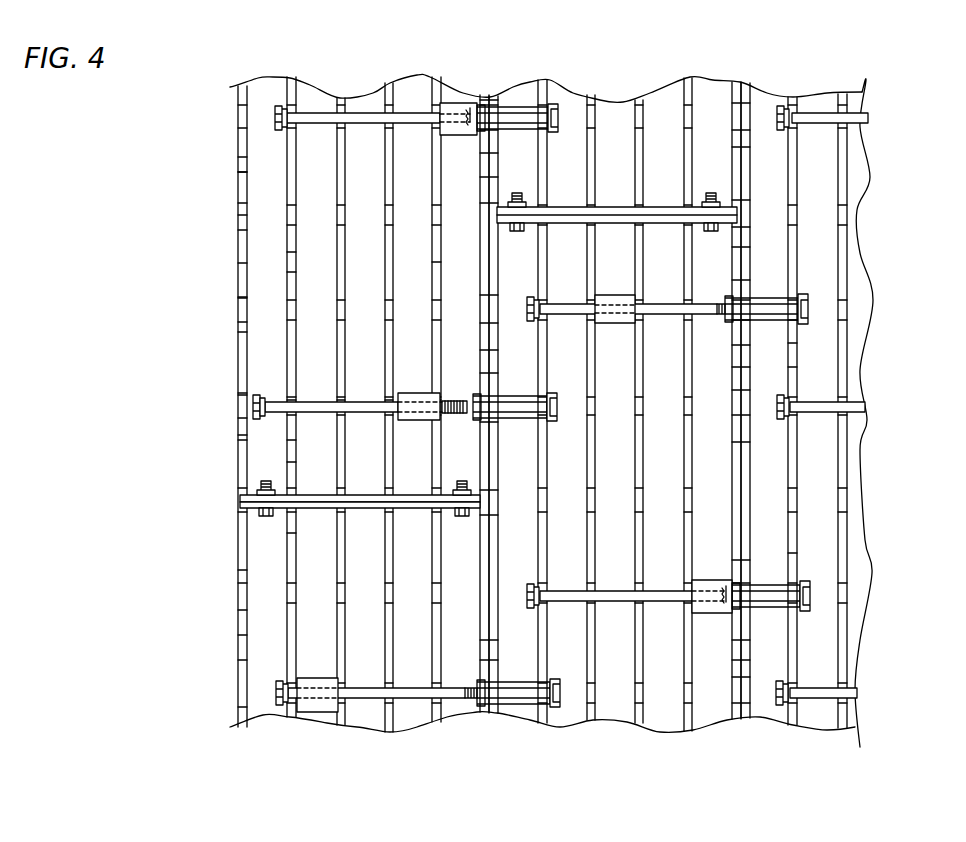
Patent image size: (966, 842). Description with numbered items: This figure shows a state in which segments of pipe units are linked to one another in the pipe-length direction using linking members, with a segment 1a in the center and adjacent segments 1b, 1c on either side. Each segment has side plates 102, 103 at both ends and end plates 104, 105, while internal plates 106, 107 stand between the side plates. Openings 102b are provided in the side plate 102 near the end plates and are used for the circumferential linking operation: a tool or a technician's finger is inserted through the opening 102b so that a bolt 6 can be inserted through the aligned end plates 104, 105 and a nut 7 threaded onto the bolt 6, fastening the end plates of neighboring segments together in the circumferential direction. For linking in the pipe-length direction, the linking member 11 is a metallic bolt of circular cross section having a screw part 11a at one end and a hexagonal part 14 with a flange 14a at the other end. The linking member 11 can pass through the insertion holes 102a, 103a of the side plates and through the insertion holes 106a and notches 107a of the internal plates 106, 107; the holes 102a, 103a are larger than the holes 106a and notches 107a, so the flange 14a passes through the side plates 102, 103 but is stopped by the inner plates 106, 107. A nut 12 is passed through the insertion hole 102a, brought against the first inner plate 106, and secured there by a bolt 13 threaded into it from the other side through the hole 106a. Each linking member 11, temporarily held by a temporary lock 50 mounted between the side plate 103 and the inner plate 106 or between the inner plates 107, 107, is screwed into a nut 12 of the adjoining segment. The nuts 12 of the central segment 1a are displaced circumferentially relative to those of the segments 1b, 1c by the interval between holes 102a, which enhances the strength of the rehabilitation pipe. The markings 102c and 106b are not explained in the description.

The segment 1a is at (627, 743).
The segment 1b is at (196, 129).
The segment 1c is at (889, 442).
The bolt 6 is at (258, 516).
The nut 7 is at (451, 391).
The linking member 11 is at (320, 124).
The screw part 11a is at (455, 401).
The nut 12 is at (500, 396).
The bolt 13 is at (552, 393).
The hexagonal part 14 is at (278, 126).
The flange 14a is at (262, 418).
The temporary lock 50 is at (460, 136).
The side plate 102 is at (494, 95).
The insertion hole 102a is at (238, 215).
The opening 102b is at (238, 332).
The frame member portion 102c is at (238, 172).
The side plate 103 is at (484, 95).
The insertion hole 103a is at (482, 422).
The end plate 104 is at (312, 494).
The end plate 105 is at (313, 509).
The inner plate 106 is at (290, 78).
The insertion hole 106a is at (293, 400).
The stud portion 106b is at (437, 262).
The inner plate 107 is at (340, 97).
The notch 107a is at (343, 400).